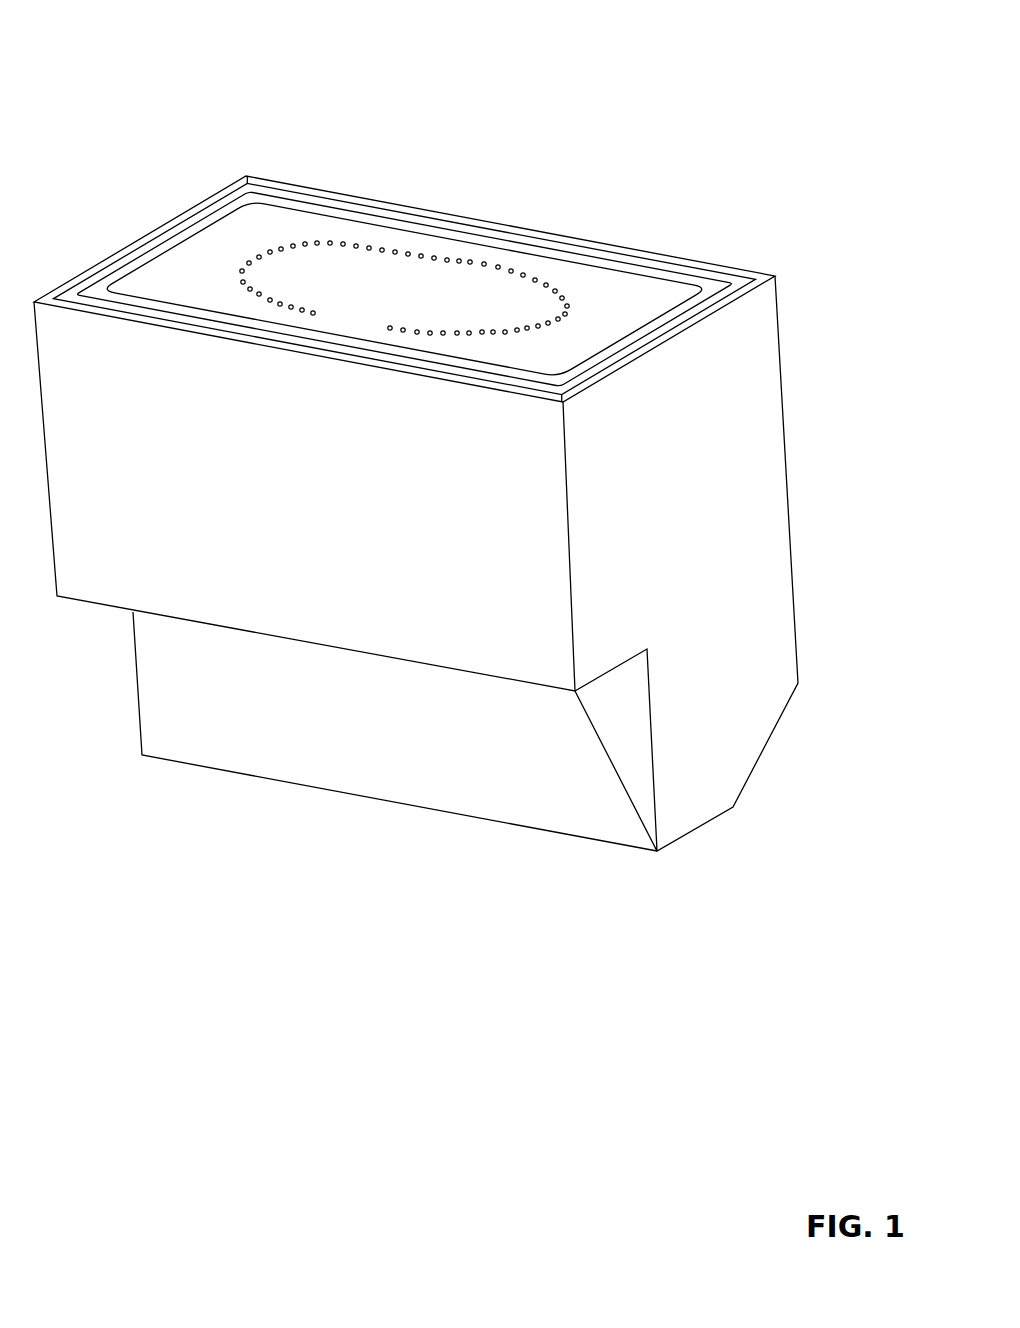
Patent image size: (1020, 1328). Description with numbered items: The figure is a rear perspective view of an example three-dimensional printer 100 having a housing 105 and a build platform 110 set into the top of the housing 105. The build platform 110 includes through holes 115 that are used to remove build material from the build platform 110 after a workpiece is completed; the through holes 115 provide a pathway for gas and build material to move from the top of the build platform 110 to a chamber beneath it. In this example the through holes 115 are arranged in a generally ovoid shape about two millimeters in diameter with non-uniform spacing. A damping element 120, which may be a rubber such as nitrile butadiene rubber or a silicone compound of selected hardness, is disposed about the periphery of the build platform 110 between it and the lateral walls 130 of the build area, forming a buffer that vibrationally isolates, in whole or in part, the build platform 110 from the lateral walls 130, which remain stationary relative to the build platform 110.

The 3D printer 100 is at (616, 108).
The housing 105 is at (737, 424).
The build platform 110 is at (153, 261).
The through holes 115 is at (471, 261).
The damping element 120 is at (438, 236).
The lateral walls 130 is at (188, 232).